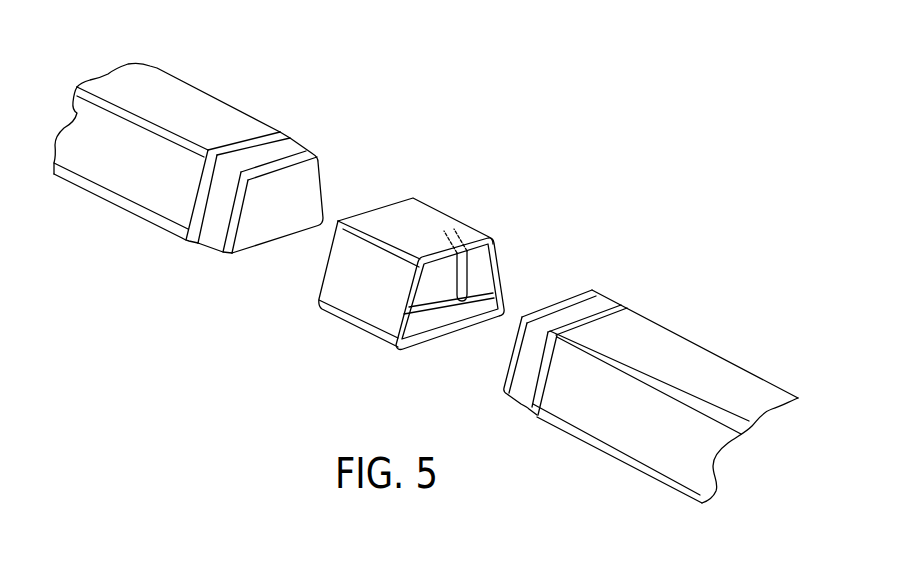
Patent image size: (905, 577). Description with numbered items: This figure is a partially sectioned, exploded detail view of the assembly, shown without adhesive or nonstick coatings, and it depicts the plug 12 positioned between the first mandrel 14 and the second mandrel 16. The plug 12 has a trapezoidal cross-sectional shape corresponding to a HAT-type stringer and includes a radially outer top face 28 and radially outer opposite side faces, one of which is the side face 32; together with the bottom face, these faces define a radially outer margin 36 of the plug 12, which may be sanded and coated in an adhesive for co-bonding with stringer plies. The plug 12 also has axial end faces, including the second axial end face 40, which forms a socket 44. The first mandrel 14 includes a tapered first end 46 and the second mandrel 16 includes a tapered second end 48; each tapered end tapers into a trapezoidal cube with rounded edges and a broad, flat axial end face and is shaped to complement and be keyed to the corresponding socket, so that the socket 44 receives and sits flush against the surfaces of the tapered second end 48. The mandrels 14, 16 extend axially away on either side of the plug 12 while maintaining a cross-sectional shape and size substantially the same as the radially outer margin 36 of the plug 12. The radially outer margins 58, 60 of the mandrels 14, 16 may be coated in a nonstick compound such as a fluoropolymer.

The plug 12 is at (465, 192).
The first mandrel 14 is at (235, 88).
The second mandrel 16 is at (700, 332).
The radially outer top face 28 is at (408, 228).
The radially outer side face 32 is at (342, 280).
The radially outer margin 36 is at (474, 227).
The second axial end face 40 is at (428, 291).
The socket 44 is at (433, 326).
The tapered first end 46 is at (310, 137).
The tapered second end 48 is at (615, 292).
The radially outer margin 58 is at (122, 209).
The radially outer margin 60 is at (604, 452).